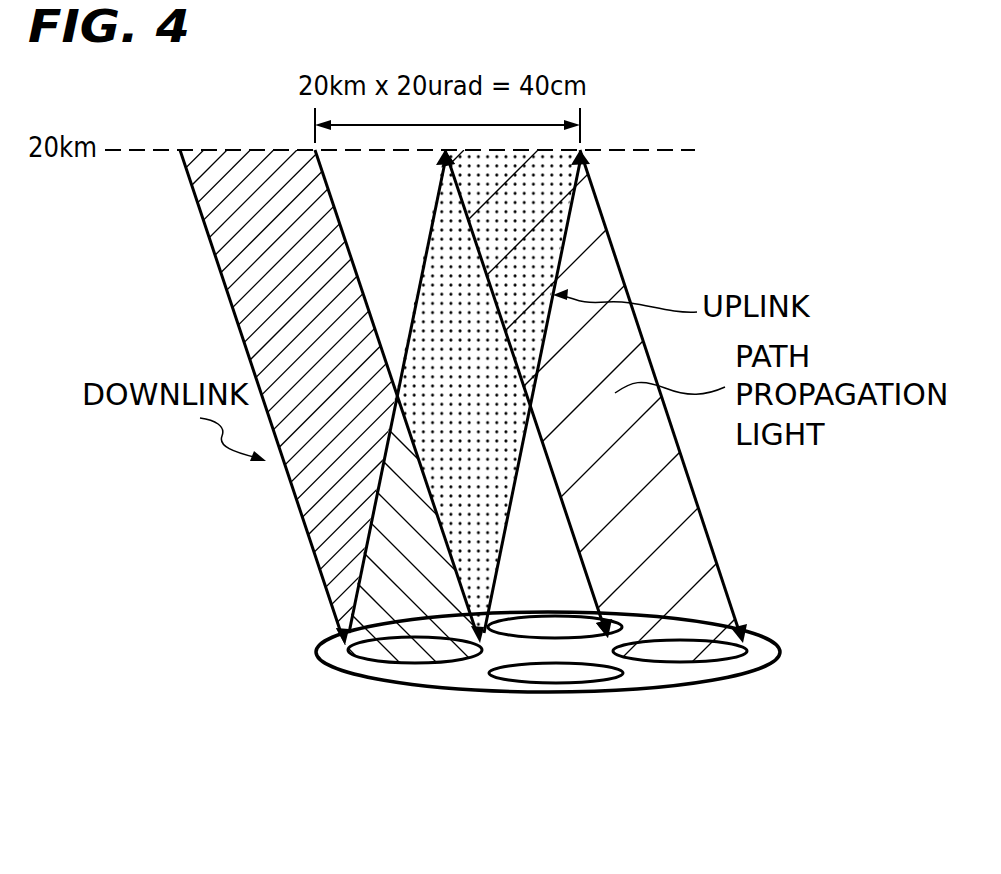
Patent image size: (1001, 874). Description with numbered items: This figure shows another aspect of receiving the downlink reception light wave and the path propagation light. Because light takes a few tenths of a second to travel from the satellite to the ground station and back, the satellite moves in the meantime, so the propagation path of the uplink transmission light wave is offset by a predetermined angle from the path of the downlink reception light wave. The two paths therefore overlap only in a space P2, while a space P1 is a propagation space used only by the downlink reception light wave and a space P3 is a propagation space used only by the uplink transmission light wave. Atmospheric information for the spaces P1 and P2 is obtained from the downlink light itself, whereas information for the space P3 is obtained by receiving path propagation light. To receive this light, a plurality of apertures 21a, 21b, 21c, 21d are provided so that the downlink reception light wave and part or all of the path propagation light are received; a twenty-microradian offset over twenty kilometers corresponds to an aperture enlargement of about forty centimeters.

The aperture 21a is at (405, 655).
The aperture 21b is at (568, 625).
The aperture 21c is at (732, 657).
The aperture 21d is at (553, 672).
The space P1 is at (451, 425).
The space P2 is at (422, 425).
The space P3 is at (488, 397).